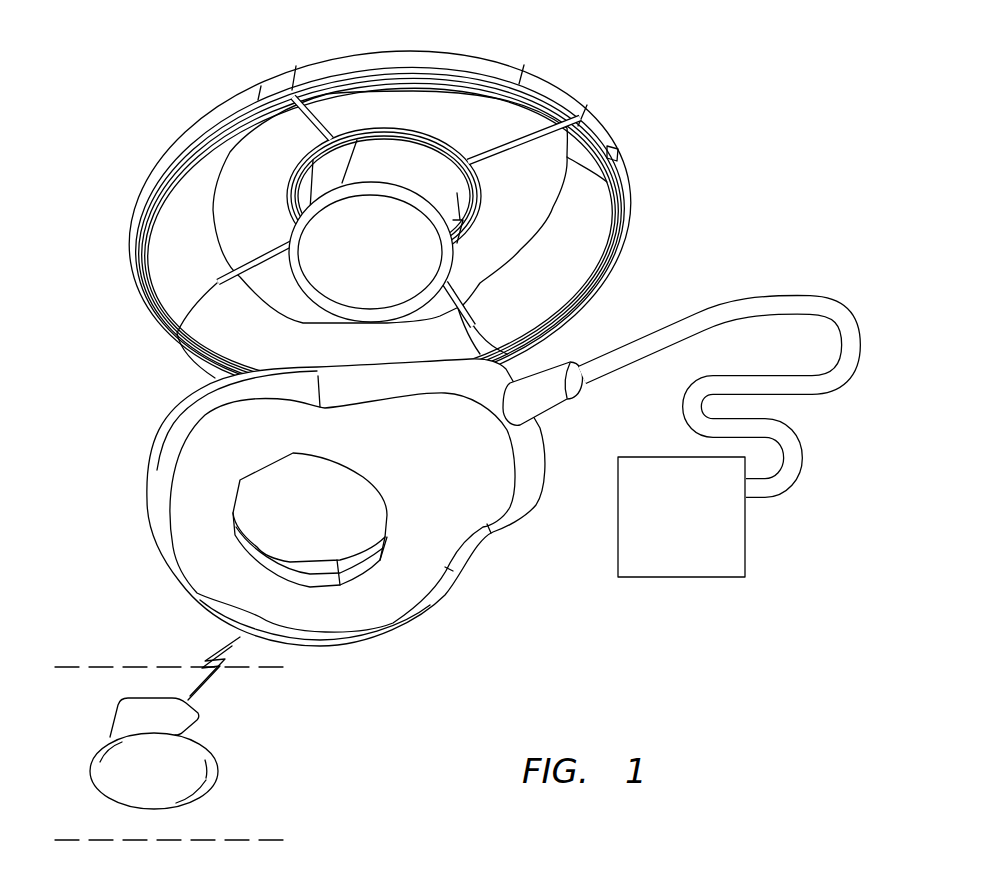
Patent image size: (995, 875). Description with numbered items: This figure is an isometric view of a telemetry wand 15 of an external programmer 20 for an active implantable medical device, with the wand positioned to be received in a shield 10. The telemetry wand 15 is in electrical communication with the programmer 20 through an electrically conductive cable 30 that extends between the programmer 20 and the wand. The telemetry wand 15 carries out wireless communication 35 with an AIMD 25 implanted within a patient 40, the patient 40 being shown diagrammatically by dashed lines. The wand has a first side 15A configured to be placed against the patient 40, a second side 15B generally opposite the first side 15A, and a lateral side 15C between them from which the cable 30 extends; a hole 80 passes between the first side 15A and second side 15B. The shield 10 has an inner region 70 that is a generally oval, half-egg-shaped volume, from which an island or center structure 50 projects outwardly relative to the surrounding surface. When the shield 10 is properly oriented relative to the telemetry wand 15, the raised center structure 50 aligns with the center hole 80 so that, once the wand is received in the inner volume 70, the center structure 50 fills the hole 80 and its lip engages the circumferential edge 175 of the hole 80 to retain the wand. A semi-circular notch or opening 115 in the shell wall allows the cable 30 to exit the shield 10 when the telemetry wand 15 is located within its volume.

The shield 10 is at (648, 236).
The semi-circular notch or opening 115 is at (626, 121).
The inner region 70 is at (560, 287).
The center structure 50 is at (412, 172).
The telemetry wand 15 is at (508, 541).
The first side 15A is at (378, 612).
The second side 15B is at (180, 400).
The lateral side 15C is at (503, 358).
The hole 80 is at (250, 516).
The circumferential edge 175 is at (310, 588).
The cable 30 is at (752, 298).
The programmer 20 is at (680, 578).
The patient 40 is at (111, 664).
The wireless communication 35 is at (242, 656).
The AIMD 25 is at (213, 782).